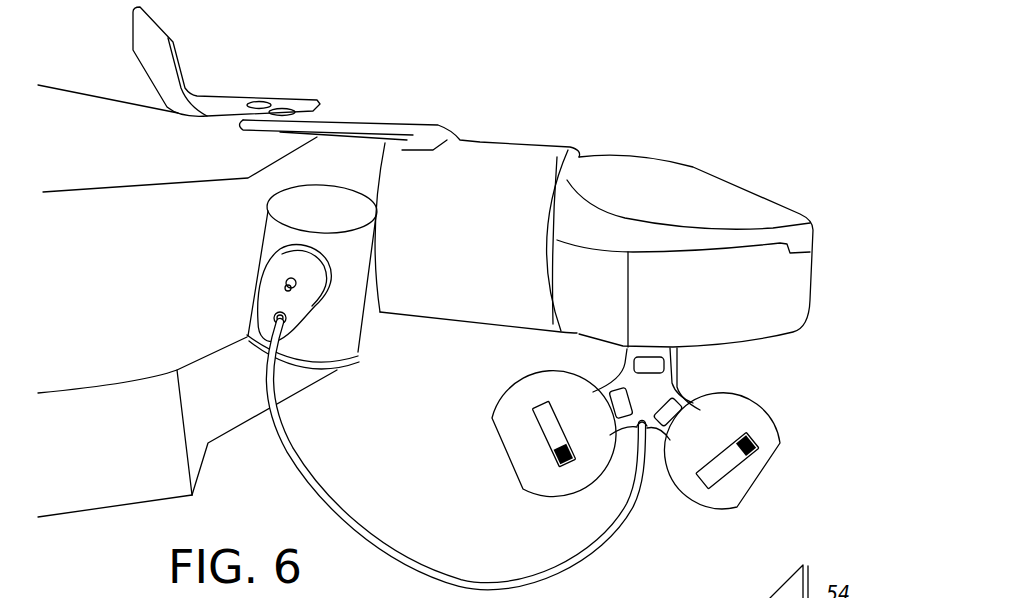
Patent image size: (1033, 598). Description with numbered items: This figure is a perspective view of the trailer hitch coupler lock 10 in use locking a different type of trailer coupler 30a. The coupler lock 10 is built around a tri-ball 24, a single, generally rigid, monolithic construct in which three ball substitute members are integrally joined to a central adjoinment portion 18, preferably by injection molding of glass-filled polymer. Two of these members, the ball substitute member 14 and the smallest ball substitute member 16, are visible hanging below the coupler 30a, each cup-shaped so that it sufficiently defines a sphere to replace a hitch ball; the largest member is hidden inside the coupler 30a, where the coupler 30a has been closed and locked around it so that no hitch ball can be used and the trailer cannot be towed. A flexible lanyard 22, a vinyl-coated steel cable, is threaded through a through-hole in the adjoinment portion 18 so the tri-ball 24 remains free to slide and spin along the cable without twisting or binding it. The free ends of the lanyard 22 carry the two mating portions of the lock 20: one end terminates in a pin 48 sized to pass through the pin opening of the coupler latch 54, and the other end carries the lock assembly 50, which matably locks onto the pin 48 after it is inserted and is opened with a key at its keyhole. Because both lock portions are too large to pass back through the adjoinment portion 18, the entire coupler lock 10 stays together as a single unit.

The trailer hitch coupler lock 10 is at (858, 310).
The ball substitute member 14 is at (517, 390).
The ball substitute member 16 is at (773, 440).
The adjoinment portion 18 is at (688, 387).
The lock 20 is at (377, 395).
The lanyard 22 is at (400, 556).
The tri-ball 24 is at (812, 381).
The coupler 30a is at (735, 138).
The pin 48 is at (290, 270).
The lock assembly 50 is at (337, 324).
The coupler latch 54 is at (143, 40).